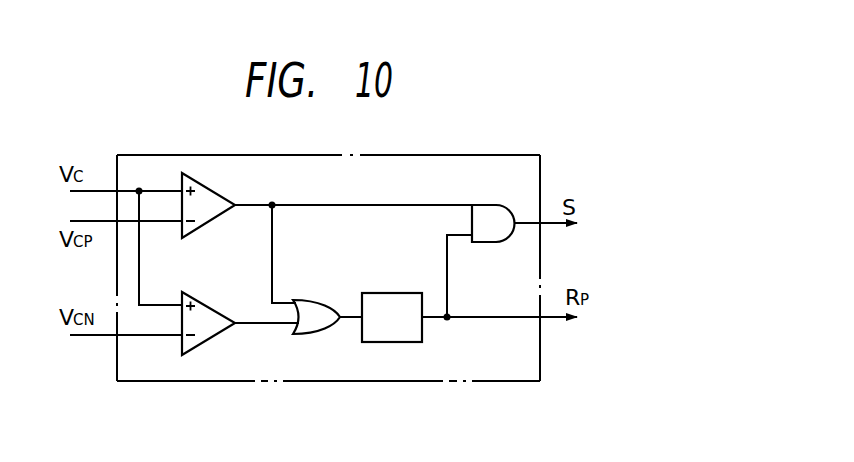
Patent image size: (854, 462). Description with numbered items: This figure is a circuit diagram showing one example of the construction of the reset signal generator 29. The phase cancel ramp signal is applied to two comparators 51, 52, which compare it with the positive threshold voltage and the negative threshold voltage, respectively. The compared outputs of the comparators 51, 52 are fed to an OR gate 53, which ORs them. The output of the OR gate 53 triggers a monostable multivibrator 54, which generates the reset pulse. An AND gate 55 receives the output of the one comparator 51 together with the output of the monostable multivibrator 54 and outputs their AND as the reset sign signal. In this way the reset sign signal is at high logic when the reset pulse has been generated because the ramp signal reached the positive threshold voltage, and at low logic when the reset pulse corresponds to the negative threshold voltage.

The reset signal generator 29 is at (504, 382).
The comparator 51 is at (220, 194).
The comparator 52 is at (222, 313).
The OR gate 53 is at (309, 299).
The monostable multivibrator 54 is at (380, 293).
The AND gate 55 is at (498, 205).